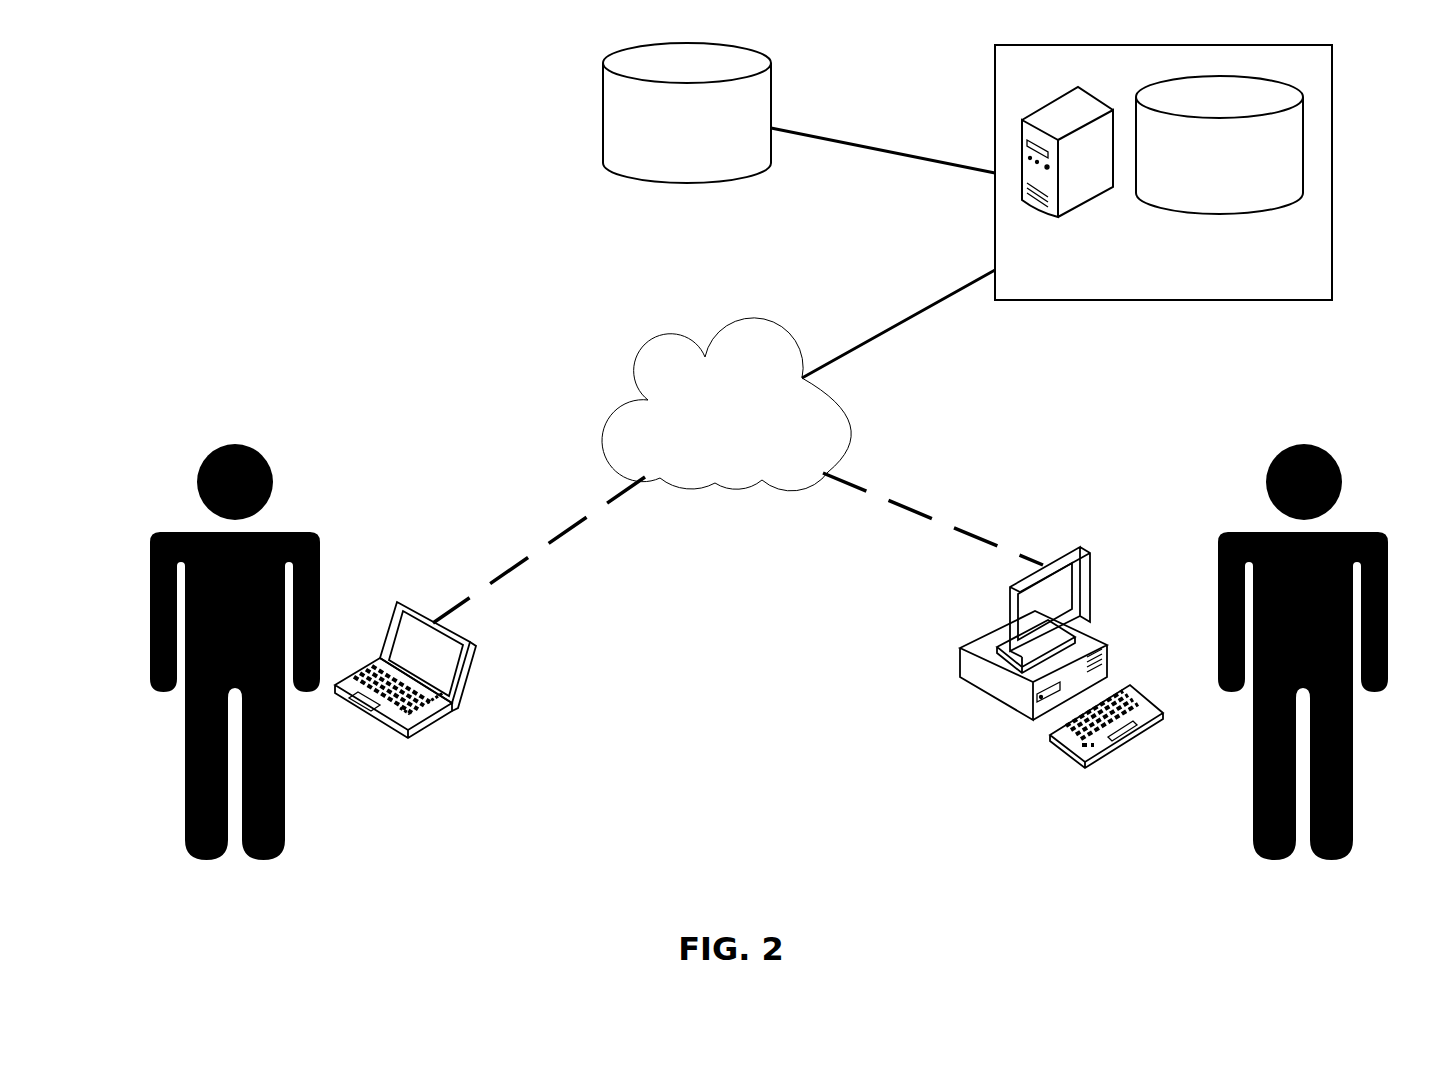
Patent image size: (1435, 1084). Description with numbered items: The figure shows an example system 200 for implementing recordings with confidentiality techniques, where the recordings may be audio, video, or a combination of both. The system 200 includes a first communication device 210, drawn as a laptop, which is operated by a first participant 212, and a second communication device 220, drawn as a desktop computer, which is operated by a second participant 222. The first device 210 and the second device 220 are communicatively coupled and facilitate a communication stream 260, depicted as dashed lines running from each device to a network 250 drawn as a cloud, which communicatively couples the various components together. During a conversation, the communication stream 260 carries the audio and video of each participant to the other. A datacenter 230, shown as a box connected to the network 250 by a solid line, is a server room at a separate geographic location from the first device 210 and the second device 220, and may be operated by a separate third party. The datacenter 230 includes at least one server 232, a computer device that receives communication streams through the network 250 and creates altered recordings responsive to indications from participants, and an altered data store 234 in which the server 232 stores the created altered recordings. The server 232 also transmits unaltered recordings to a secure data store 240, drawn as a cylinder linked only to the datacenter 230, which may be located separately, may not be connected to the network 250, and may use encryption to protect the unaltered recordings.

The system 200 is at (627, 229).
The first communication device 210 is at (391, 747).
The first participant 212 is at (161, 870).
The second communication device 220 is at (1148, 763).
The second participant 222 is at (1373, 875).
The datacenter 230 is at (1163, 172).
The server 232 is at (1067, 152).
The altered data store 234 is at (1219, 145).
The secure data store 240 is at (687, 113).
The network 250 is at (726, 404).
The communication stream 260 is at (628, 549).